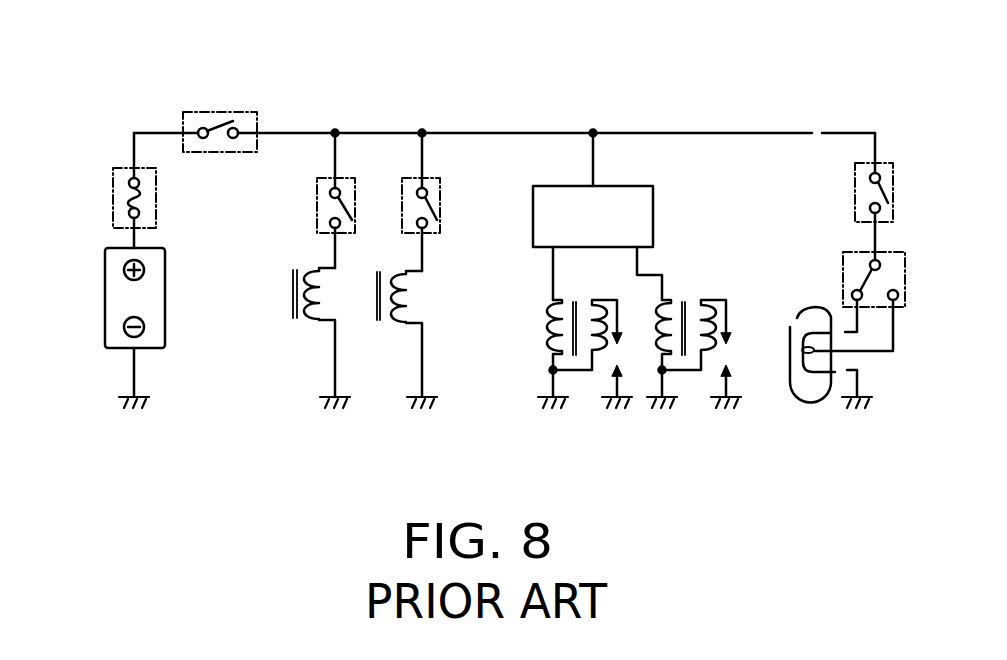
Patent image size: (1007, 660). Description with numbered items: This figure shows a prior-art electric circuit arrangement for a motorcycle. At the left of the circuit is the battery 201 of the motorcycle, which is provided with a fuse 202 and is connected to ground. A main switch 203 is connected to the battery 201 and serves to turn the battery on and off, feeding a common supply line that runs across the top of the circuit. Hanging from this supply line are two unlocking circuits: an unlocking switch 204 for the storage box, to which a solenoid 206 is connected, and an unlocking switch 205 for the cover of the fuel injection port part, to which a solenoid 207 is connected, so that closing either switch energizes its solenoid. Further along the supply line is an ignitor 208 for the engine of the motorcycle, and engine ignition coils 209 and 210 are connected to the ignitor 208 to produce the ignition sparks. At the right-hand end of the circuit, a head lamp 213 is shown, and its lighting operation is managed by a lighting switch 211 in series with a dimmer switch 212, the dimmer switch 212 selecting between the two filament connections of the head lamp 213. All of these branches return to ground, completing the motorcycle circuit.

The battery 201 is at (167, 273).
The fuse 202 is at (113, 192).
The main switch 203 is at (234, 108).
The unlocking switch for the storage box 204 is at (348, 177).
The unlocking switch for the cover of the fuel injection port part 205 is at (432, 177).
The solenoid 206 is at (292, 290).
The solenoid 207 is at (408, 285).
The ignitor 208 is at (655, 205).
The engine ignition coil 209 is at (547, 310).
The engine ignition coil 210 is at (655, 323).
The lighting switch 211 is at (855, 177).
The dimmer switch 212 is at (843, 265).
The head lamp 213 is at (788, 352).